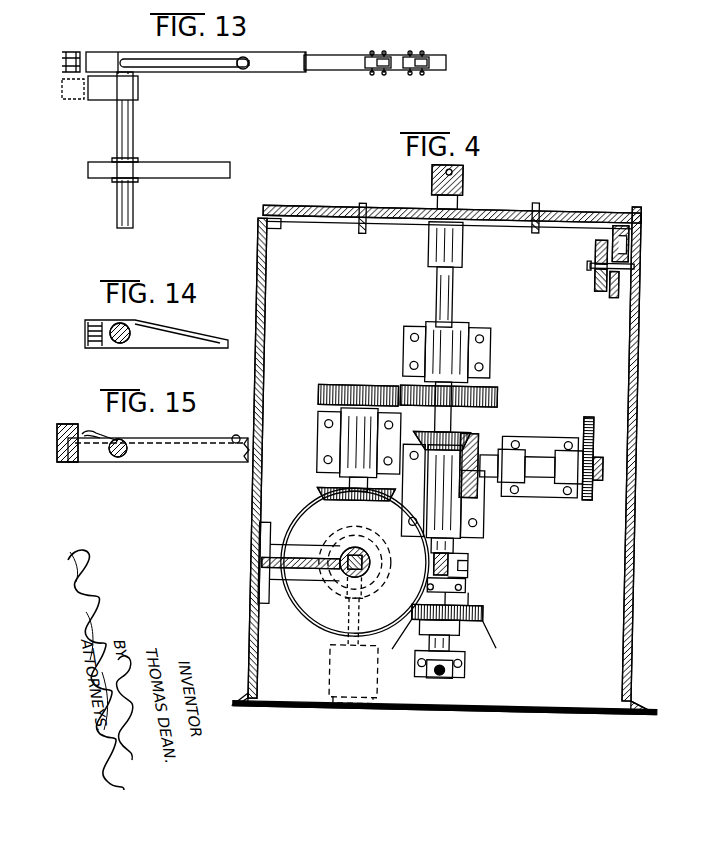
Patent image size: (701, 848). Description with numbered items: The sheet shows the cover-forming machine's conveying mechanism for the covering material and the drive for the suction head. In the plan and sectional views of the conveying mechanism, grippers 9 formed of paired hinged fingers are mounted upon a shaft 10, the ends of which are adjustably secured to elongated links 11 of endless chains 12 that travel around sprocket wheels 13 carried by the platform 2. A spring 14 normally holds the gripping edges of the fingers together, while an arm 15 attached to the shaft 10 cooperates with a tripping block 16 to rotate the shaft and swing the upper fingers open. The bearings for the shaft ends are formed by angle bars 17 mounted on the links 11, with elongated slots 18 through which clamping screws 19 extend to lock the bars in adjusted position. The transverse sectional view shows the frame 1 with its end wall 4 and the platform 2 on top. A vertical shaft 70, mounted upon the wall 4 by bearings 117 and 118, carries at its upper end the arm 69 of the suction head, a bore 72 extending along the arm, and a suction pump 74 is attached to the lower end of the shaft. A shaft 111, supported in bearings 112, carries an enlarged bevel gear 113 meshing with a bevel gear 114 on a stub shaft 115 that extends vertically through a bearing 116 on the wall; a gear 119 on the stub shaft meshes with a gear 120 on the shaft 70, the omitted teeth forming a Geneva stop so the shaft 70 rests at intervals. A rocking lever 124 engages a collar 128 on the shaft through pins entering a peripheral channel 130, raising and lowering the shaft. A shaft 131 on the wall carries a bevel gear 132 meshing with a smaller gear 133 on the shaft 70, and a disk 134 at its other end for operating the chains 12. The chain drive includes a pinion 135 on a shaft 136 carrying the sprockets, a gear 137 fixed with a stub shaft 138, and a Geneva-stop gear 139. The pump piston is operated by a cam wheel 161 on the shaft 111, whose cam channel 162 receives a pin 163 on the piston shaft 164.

In FIG. 4, the frame 1 is at (637, 308).
In FIG. 4, the platform 2 is at (555, 215).
In FIG. 4, the end wall 4 is at (541, 701).
In FIG. 13, the grippers 9 is at (212, 176).
In FIG. 14, the grippers 9 is at (165, 348).
In FIG. 13, the shaft 10 is at (133, 206).
In FIG. 14, the shaft 10 is at (115, 343).
In FIG. 15, the shaft 10 is at (122, 457).
In FIG. 13, the elongated links 11 is at (316, 64).
In FIG. 15, the elongated links 11 is at (240, 462).
In FIG. 13, the endless chains 12 is at (405, 72).
In FIG. 4, the sprocket wheels 13 is at (355, 230).
In FIG. 13, the spring 14 is at (252, 238).
In FIG. 14, the spring 14 is at (88, 331).
In FIG. 13, the arm 15 is at (100, 76).
In FIG. 15, the arm 15 is at (95, 445).
In FIG. 13, the tripping block 16 is at (72, 52).
In FIG. 15, the tripping block 16 is at (66, 428).
In FIG. 4, the tripping block 16 is at (317, 390).
In FIG. 13, the angle bars 17 is at (217, 66).
In FIG. 15, the angle bars 17 is at (196, 455).
In FIG. 13, the elongated slots 18 is at (185, 66).
In FIG. 13, the clamping screws 19 is at (250, 57).
In FIG. 15, the clamping screws 19 is at (234, 435).
In FIG. 4, the arm 69 is at (457, 182).
In FIG. 4, the shaft 70 is at (450, 297).
In FIG. 4, the bore 72 is at (426, 177).
In FIG. 4, the suction pump 74 is at (374, 680).
In FIG. 4, the shaft 111 is at (354, 580).
In FIG. 4, the bearings 112 is at (308, 555).
In FIG. 4, the enlarged bevel gear 113 is at (354, 562).
In FIG. 4, the bevel gear 114 is at (330, 495).
In FIG. 4, the stub shaft 115 is at (350, 487).
In FIG. 4, the bearing 116 is at (350, 440).
In FIG. 4, the bearing 117 is at (490, 347).
In FIG. 4, the bearing 118 is at (455, 510).
In FIG. 4, the gear 119 is at (332, 387).
In FIG. 4, the gear 120 is at (488, 404).
In FIG. 4, the rocking lever 124 is at (468, 574).
In FIG. 4, the collar 128 is at (470, 555).
In FIG. 4, the peripheral channel 130 is at (450, 566).
In FIG. 4, the shaft 131 is at (542, 458).
In FIG. 4, the bevel gear 132 is at (480, 500).
In FIG. 4, the gear 133 is at (418, 432).
In FIG. 4, the disk 134 is at (588, 497).
In FIG. 4, the pinion 135 is at (612, 210).
In FIG. 4, the shaft 136 is at (571, 226).
In FIG. 4, the gear 137 is at (609, 296).
In FIG. 4, the stub shaft 138 is at (630, 262).
In FIG. 4, the gear 139 is at (594, 281).
In FIG. 4, the cam wheel 161 is at (368, 543).
In FIG. 4, the cam channel 162 is at (390, 576).
In FIG. 4, the pin 163 is at (364, 592).
In FIG. 4, the piston shaft 164 is at (362, 618).